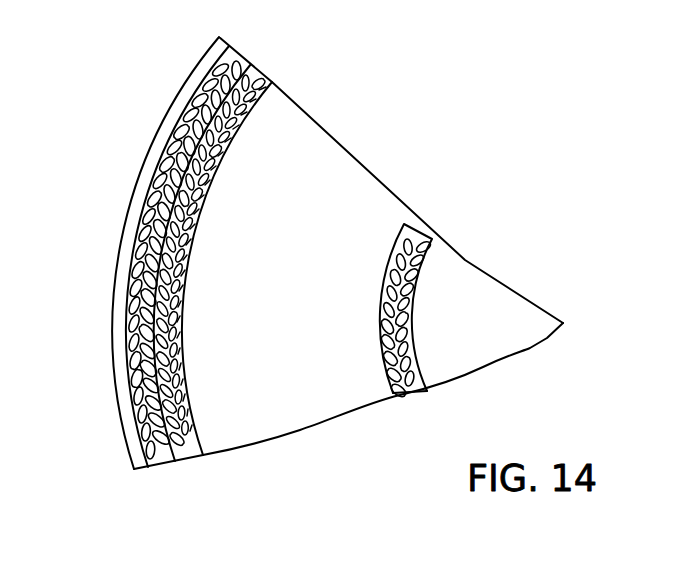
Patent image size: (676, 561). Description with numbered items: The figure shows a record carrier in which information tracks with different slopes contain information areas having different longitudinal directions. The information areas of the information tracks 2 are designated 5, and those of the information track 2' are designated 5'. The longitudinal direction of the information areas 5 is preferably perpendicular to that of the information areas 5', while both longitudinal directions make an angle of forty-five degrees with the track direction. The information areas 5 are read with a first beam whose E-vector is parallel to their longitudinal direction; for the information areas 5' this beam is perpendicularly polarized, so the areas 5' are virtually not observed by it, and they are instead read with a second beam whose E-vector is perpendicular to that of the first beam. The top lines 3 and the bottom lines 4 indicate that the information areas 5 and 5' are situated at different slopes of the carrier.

The information tracks 2 is at (271, 448).
The information track 2' is at (298, 446).
The top lines 3 is at (220, 38).
The bottom lines 4 is at (237, 46).
The information areas 5 is at (283, 260).
The information areas 5' is at (277, 260).